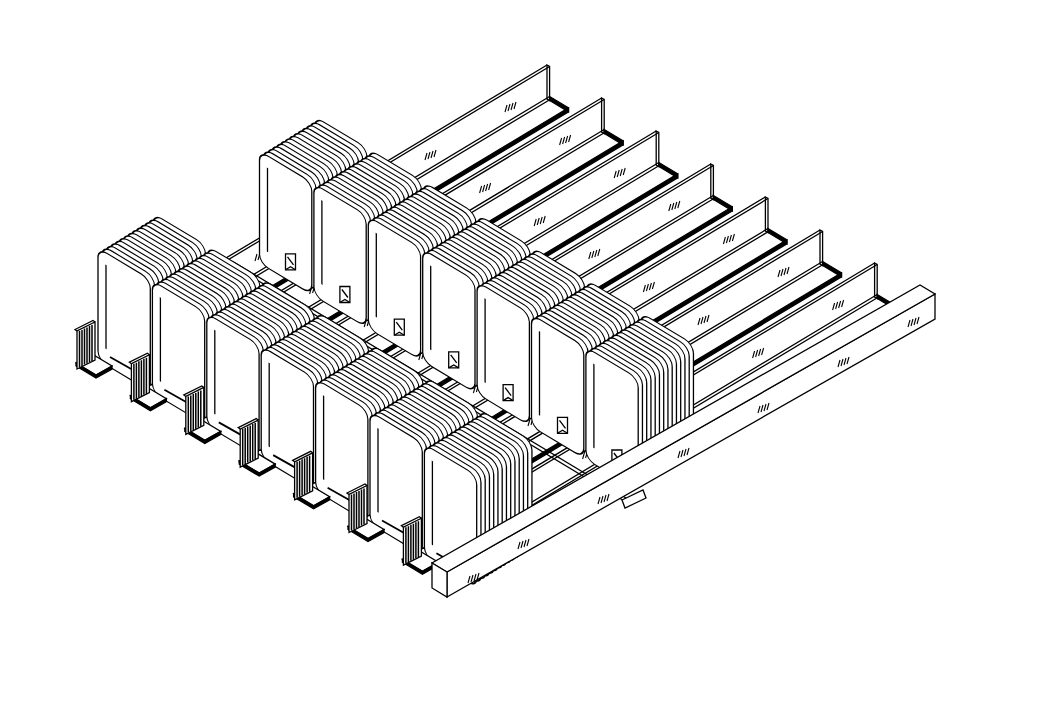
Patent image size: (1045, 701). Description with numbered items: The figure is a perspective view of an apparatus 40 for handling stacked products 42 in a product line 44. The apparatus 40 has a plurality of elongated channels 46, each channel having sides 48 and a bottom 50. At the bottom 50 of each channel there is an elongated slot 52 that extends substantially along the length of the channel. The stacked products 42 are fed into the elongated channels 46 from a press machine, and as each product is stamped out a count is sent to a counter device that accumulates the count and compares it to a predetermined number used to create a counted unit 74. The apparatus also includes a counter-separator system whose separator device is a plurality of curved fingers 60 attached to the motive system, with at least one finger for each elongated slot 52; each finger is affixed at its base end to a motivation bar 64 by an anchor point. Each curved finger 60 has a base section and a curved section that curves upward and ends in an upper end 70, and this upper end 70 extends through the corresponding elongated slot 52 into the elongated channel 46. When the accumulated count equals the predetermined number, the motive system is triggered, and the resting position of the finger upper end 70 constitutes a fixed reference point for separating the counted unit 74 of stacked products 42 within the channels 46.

The apparatus 40 is at (488, 343).
The stacked products 42 is at (378, 331).
The product line 44 is at (122, 207).
The elongated channels 46 is at (628, 128).
The sides 48 is at (140, 400).
The bottom 50 is at (90, 372).
The elongated slot 52 is at (572, 106).
The curved fingers 60 is at (451, 353).
The motivation bar 64 is at (641, 521).
The upper end 70 is at (290, 255).
The counted unit 74 is at (278, 140).